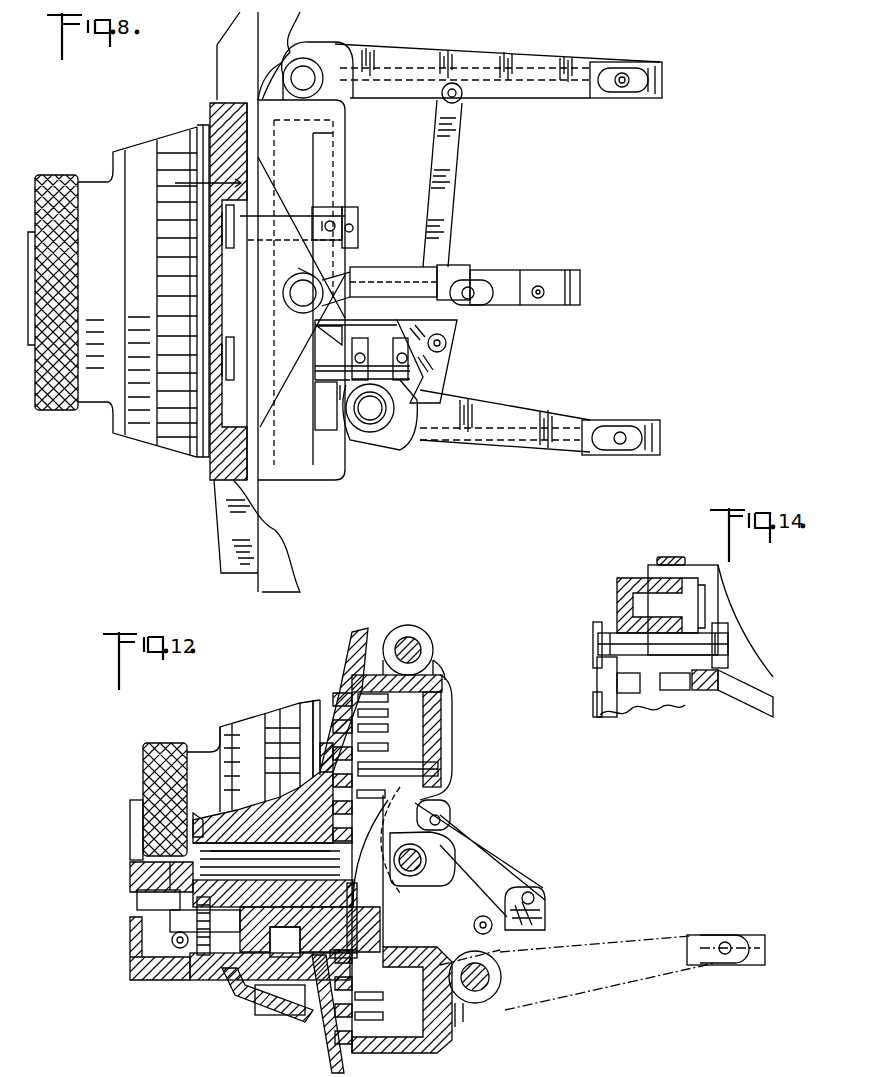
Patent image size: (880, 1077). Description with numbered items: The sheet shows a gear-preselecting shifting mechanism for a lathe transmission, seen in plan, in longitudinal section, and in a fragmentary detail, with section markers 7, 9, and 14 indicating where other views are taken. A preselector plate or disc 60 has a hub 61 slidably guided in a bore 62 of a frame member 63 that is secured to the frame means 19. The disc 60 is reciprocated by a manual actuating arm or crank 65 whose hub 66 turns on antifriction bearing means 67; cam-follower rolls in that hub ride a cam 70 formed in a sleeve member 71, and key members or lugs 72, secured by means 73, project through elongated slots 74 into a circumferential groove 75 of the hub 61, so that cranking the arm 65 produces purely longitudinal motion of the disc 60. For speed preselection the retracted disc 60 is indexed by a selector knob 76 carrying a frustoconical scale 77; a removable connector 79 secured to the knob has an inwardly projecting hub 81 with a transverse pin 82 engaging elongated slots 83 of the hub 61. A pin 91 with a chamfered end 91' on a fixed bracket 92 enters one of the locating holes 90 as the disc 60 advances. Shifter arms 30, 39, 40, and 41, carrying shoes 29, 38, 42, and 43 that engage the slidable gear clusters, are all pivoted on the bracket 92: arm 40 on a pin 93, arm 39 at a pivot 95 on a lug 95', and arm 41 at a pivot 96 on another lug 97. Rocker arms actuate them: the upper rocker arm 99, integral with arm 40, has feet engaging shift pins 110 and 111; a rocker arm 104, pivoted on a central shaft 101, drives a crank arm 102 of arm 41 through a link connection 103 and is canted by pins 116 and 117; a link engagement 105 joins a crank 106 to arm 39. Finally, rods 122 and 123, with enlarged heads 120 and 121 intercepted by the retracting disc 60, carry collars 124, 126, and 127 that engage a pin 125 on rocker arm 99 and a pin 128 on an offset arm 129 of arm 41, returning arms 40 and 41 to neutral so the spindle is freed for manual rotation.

In FIG. 8, the section line 7- 7 is at (277, 44).
In FIG. 8, the section line 9- 9 is at (208, 176).
In FIG. 8, the section line 14- 14 is at (184, 238).
In FIG. 8, the frame means 19 is at (290, 585).
In FIG. 8, the shoe 29 is at (582, 268).
In FIG. 8, the actuating arm or crank 30 is at (404, 265).
In FIG. 8, the shoe 38 is at (658, 98).
In FIG. 8, the actuating arm 39 is at (535, 90).
In FIG. 8, the shifting arm 40 is at (397, 268).
In FIG. 14, the shifting arm 40 is at (750, 673).
In FIG. 8, the shifting arm 41 is at (560, 418).
In FIG. 12, the shifting arm 41 is at (632, 950).
In FIG. 8, the shoe 42 is at (505, 305).
In FIG. 8, the shoe 43 is at (655, 420).
In FIG. 12, the shoe 43 is at (757, 935).
In FIG. 8, the preselector plate or disc 60 is at (262, 156).
In FIG. 12, the preselector plate or disc 60 is at (345, 910).
In FIG. 14, the preselector plate or disc 60 is at (613, 716).
In FIG. 8, the hub 61 is at (212, 314).
In FIG. 12, the hub 61 is at (272, 838).
In FIG. 12, the bore 62 is at (310, 912).
In FIG. 8, the frame member 63 is at (225, 535).
In FIG. 12, the frame member 63 is at (282, 838).
In FIG. 8, the actuating arm or crank 65 is at (205, 124).
In FIG. 12, the actuating arm or crank 65 is at (312, 700).
In FIG. 12, the hub 66 is at (262, 975).
In FIG. 12, the antifriction bearing means 67 is at (180, 950).
In FIG. 12, the cam 70 is at (270, 967).
In FIG. 12, the sleeve member 71 is at (271, 938).
In FIG. 12, the key members or lugs 72 is at (275, 845).
In FIG. 12, the securing means 73 is at (210, 957).
In FIG. 12, the elongated slots 74 is at (175, 928).
In FIG. 12, the circumferential groove 75 is at (193, 829).
In FIG. 8, the selector knob 76 is at (62, 176).
In FIG. 12, the selector knob 76 is at (187, 745).
In FIG. 8, the frustoconical scale 77 is at (180, 130).
In FIG. 12, the frustoconical scale 77 is at (298, 708).
In FIG. 8, the center disc or connector 79 is at (29, 286).
In FIG. 12, the center disc or connector 79 is at (133, 825).
In FIG. 12, the hub 81 is at (161, 921).
In FIG. 12, the transverse pin 82 is at (180, 870).
In FIG. 12, the elongated slots 83 is at (140, 903).
In FIG. 12, the holes 90 is at (340, 776).
In FIG. 12, the pin 91 is at (398, 735).
In FIG. 12, the chamfered end 91' is at (338, 767).
In FIG. 8, the bracket 92 is at (340, 472).
In FIG. 12, the bracket 92 is at (428, 697).
In FIG. 14, the bracket 92 is at (650, 582).
In FIG. 8, the pin 93 is at (283, 294).
In FIG. 14, the pin 93 is at (675, 556).
In FIG. 8, the pivot 95 is at (317, 57).
In FIG. 12, the pivot 95 is at (413, 640).
In FIG. 8, the lug 95' is at (254, 80).
In FIG. 12, the lug 95' is at (458, 651).
In FIG. 8, the pivot 96 is at (358, 409).
In FIG. 12, the pivot 96 is at (480, 1001).
In FIG. 8, the lug 97 is at (337, 435).
In FIG. 12, the lug 97 is at (462, 1025).
In FIG. 8, the upper rocker arm 99 is at (303, 273).
In FIG. 14, the upper rocker arm 99 is at (668, 700).
In FIG. 12, the central shaft 101 is at (394, 864).
In FIG. 8, the crank arm 102 is at (450, 365).
In FIG. 12, the crank arm 102 is at (545, 926).
In FIG. 8, the link connection 103 is at (446, 343).
In FIG. 12, the link connection 103 is at (493, 848).
In FIG. 12, the third rocker arm 104 is at (495, 874).
In FIG. 8, the link engagement 105 is at (450, 162).
In FIG. 8, the crank 106 is at (455, 263).
In FIG. 8, the pin 110 is at (248, 232).
In FIG. 14, the pin 110 is at (628, 705).
In FIG. 8, the pin 111 is at (301, 300).
In FIG. 12, the pin 116 is at (372, 798).
In FIG. 12, the pin 117 is at (340, 953).
In FIG. 8, the enlarged head 120 is at (226, 247).
In FIG. 14, the enlarged head 120 is at (592, 656).
In FIG. 8, the enlarged head 121 is at (230, 375).
In FIG. 8, the rod 122 is at (246, 218).
In FIG. 14, the rod 122 is at (608, 633).
In FIG. 8, the rod 123 is at (356, 350).
In FIG. 8, the collar 124 is at (352, 207).
In FIG. 14, the collar 124 is at (720, 632).
In FIG. 8, the pin 125 is at (352, 205).
In FIG. 14, the pin 125 is at (700, 695).
In FIG. 8, the collar 126 is at (345, 393).
In FIG. 8, the collar 127 is at (410, 377).
In FIG. 8, the pin 128 is at (378, 350).
In FIG. 12, the pin 128 is at (492, 909).
In FIG. 8, the offset or arm 129 is at (402, 424).
In FIG. 12, the offset or arm 129 is at (402, 1000).